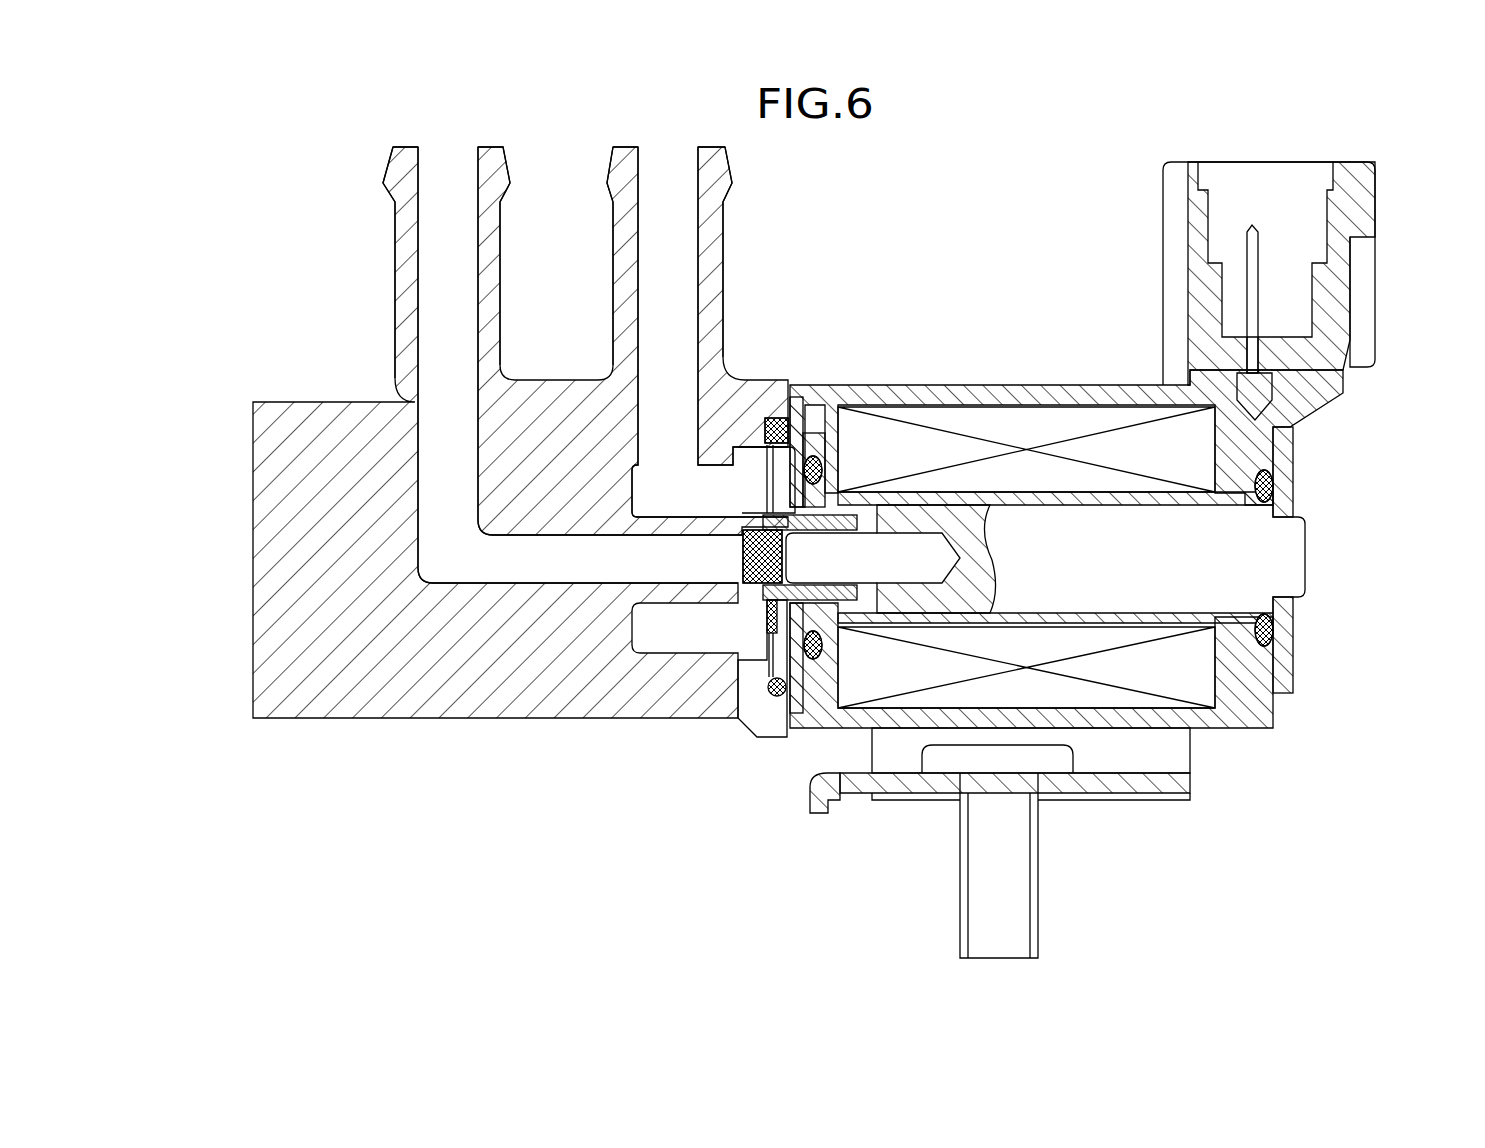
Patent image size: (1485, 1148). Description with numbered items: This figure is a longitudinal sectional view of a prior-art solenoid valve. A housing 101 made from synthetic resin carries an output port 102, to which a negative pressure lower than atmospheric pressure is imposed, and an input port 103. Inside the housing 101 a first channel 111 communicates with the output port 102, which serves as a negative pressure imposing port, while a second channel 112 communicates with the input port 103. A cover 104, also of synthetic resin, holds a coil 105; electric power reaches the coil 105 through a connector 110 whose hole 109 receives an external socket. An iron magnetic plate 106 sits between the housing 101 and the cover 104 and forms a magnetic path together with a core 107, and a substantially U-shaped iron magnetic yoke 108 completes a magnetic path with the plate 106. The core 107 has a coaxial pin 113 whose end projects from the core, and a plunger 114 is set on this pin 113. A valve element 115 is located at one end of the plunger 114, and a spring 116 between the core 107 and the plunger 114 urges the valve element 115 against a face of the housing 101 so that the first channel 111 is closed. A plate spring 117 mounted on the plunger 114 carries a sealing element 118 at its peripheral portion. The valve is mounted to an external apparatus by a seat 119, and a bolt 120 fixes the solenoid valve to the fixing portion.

The housing 101 is at (345, 665).
The output port 102 is at (410, 240).
The input port 103 is at (708, 240).
The cover 104 is at (1110, 393).
The coil 105 is at (1040, 433).
The magnetic plate 106 is at (815, 407).
The core 107 is at (1283, 538).
The magnetic yoke 108 is at (1283, 643).
The hole 109 is at (1300, 228).
The connector 110 is at (1332, 282).
The first channel 111 is at (436, 542).
The second channel 112 is at (645, 494).
The coaxial pin 113 is at (893, 543).
The plunger 114 is at (847, 490).
The valve element 115 is at (735, 515).
The spring 116 is at (822, 687).
The plate spring 117 is at (743, 663).
The sealing element 118 is at (783, 690).
The seat 119 is at (847, 780).
The mounting stud 120 is at (982, 900).